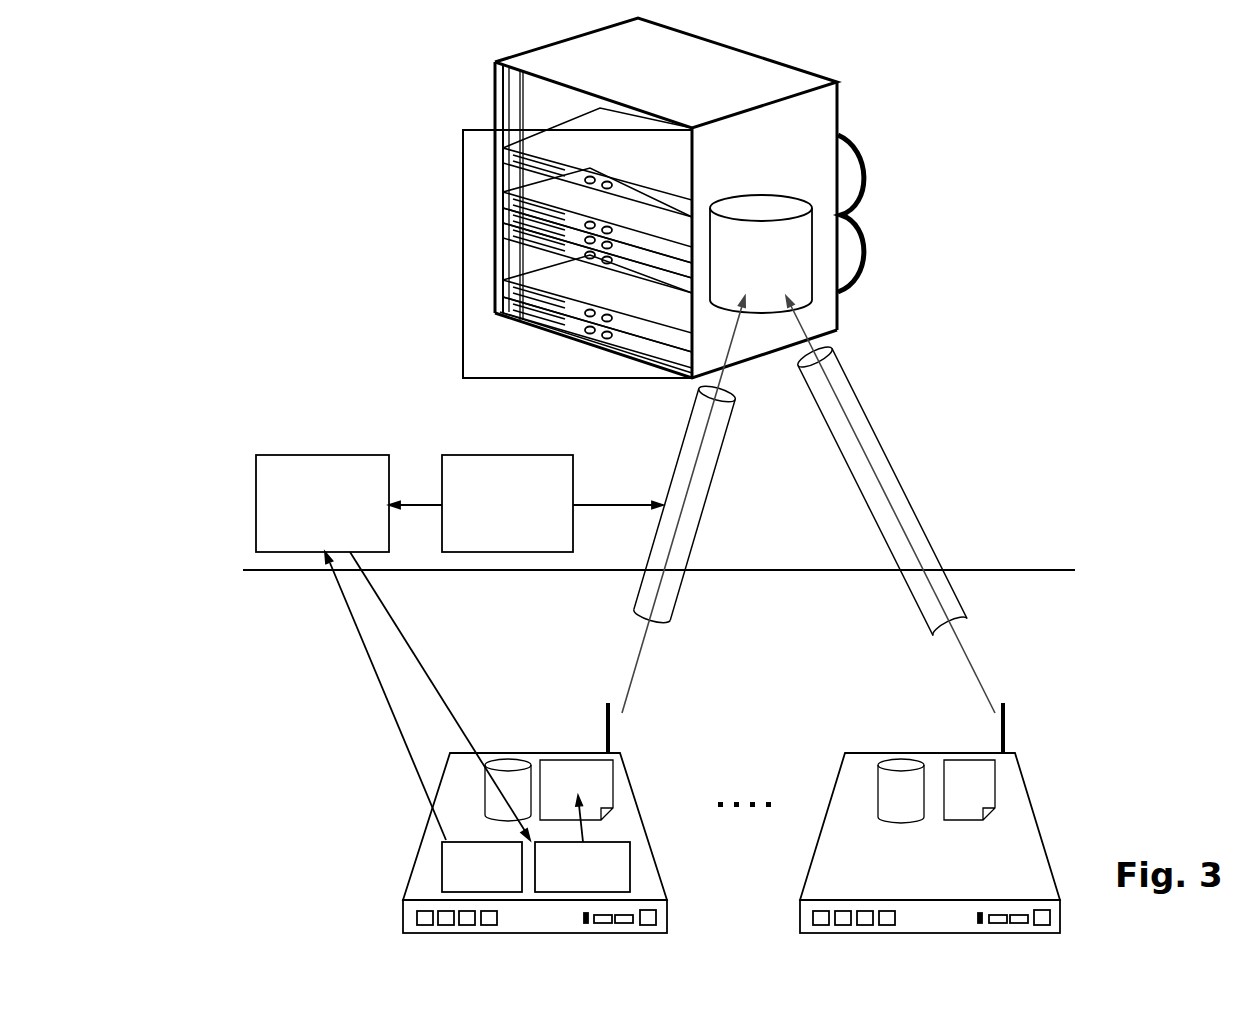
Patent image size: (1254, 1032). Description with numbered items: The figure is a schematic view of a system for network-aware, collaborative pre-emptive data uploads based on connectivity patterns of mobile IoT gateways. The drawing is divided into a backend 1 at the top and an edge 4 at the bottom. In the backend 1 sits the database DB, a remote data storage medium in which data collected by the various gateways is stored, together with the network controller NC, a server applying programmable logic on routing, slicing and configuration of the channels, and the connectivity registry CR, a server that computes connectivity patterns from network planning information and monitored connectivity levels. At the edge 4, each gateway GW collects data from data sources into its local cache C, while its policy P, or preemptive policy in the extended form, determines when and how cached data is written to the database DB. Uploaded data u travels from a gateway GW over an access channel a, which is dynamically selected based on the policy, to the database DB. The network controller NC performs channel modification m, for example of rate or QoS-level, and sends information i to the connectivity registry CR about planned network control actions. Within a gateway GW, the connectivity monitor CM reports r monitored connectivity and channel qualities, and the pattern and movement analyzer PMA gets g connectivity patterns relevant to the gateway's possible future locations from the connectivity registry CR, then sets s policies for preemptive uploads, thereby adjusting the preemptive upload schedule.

The backend 1 is at (247, 237).
The edge 4 is at (255, 803).
The connectivity registry entity CR is at (322, 503).
The network controller NC is at (507, 503).
The database DB is at (761, 254).
The gateway GW is at (731, 818).
The connectivity monitor CM is at (482, 867).
The pattern and movement analyzer PMA is at (582, 867).
The cache C is at (704, 791).
The policy P is at (767, 790).
The sending of information i is at (415, 489).
The channel modification m is at (618, 491).
The channel a is at (800, 489).
The uploaded data u is at (808, 504).
The reporting r is at (385, 696).
The getting connectivity patterns g is at (440, 696).
The setting of policies s is at (589, 818).